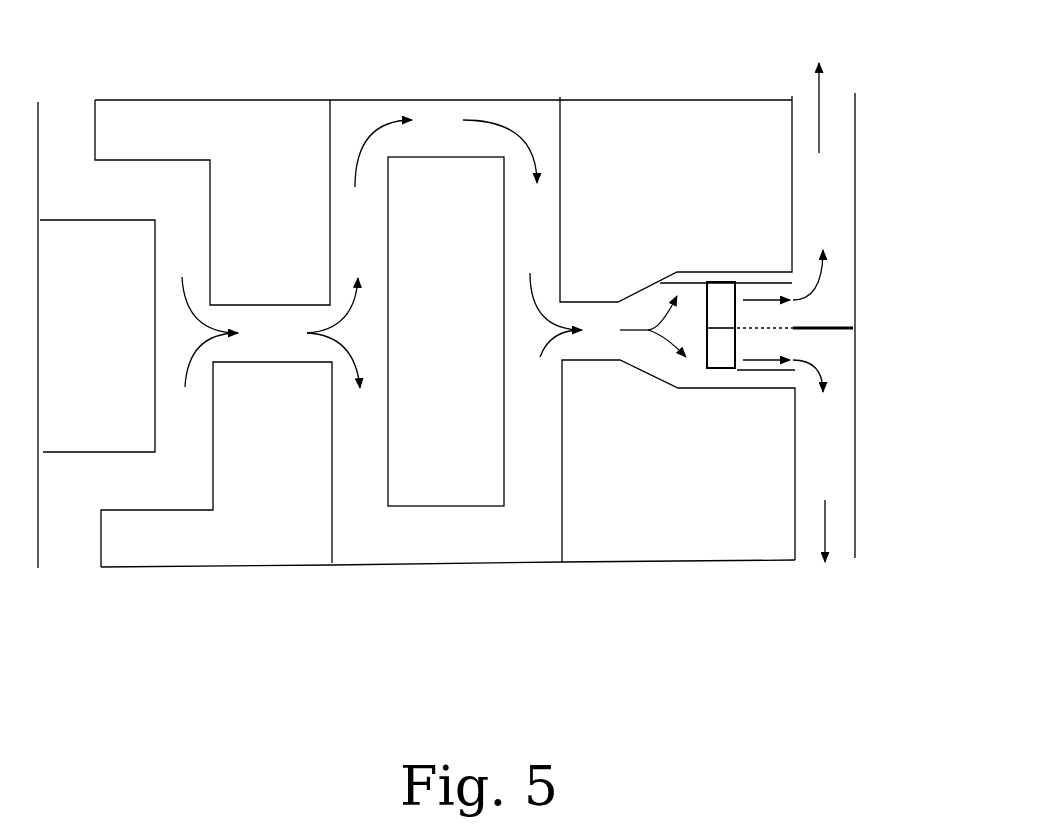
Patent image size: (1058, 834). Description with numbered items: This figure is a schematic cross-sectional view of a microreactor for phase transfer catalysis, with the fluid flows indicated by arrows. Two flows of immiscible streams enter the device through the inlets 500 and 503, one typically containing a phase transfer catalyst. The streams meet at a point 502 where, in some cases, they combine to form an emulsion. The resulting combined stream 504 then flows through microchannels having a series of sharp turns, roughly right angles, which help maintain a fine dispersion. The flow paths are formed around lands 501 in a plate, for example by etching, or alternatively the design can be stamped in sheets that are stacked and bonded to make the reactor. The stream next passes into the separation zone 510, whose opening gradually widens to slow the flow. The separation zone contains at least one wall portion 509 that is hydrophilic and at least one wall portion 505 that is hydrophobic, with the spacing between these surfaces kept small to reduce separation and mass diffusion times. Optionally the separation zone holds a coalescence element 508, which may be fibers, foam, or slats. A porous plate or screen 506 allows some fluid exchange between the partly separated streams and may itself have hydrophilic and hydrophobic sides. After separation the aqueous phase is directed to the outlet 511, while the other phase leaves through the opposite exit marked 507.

The inlet 500 is at (446, 319).
The lands 501 is at (591, 386).
The meeting point 502 is at (327, 316).
The inlet 503 is at (426, 584).
The combined stream 504 is at (532, 333).
The hydrophobic wall 505 is at (756, 276).
The porous plate or screen 506 is at (763, 317).
The upper exhaust flow 507 is at (820, 85).
The coalescence element 508 is at (718, 344).
The hydrophilic wall 509 is at (766, 381).
The separation zone 510 is at (647, 333).
The outlet 511 is at (825, 551).